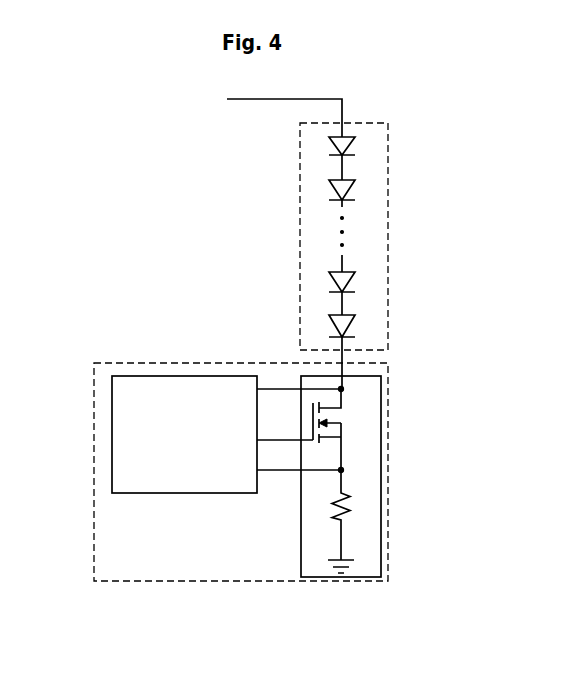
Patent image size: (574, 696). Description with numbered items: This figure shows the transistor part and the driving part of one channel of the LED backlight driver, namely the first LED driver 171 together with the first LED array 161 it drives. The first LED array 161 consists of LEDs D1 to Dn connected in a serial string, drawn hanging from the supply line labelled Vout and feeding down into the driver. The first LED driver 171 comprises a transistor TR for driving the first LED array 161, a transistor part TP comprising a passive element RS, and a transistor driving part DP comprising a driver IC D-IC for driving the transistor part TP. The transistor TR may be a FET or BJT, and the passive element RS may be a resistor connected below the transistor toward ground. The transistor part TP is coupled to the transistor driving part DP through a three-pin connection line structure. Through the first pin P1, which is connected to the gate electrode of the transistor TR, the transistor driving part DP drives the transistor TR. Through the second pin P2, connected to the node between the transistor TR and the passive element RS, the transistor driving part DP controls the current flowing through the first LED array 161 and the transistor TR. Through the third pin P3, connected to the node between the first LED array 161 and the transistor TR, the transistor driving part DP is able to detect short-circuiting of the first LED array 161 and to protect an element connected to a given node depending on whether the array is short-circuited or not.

The first LED array 161 is at (388, 230).
The first LED driver 171 is at (388, 483).
The transistor driving part DP is at (112, 434).
The transistor part TP is at (381, 536).
The transistor TR is at (341, 429).
The passive element RS is at (352, 521).
The LED D1 is at (352, 146).
The LED Dn is at (353, 327).
The first pin P1 is at (285, 431).
The second pin P2 is at (299, 459).
The third pin P3 is at (299, 382).
The driver IC D-IC is at (203, 445).
The output voltage Vout is at (284, 105).